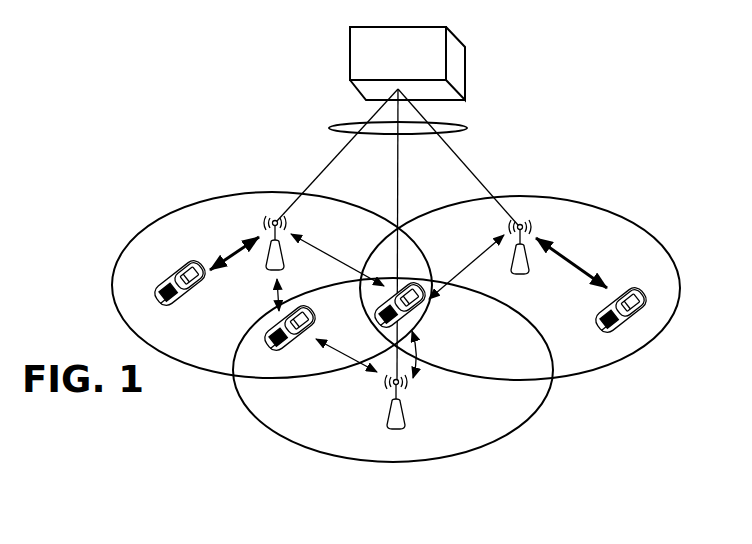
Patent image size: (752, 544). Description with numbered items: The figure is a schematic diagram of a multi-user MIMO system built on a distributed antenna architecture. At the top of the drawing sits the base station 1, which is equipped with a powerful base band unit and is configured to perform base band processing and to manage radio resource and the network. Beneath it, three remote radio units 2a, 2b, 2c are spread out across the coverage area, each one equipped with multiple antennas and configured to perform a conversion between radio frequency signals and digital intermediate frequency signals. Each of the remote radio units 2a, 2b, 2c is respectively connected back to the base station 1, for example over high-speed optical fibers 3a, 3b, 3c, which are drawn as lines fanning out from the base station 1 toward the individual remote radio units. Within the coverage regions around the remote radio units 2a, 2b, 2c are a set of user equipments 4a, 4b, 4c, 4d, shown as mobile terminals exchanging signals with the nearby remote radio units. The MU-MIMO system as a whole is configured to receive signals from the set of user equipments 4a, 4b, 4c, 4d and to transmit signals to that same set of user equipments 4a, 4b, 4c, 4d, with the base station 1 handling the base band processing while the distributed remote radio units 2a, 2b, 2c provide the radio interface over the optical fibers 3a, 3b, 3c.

The base station 1 is at (350, 43).
The remote radio unit 2a is at (263, 233).
The remote radio unit 2b is at (394, 420).
The remote radio unit 2c is at (521, 262).
The high-speed optical fiber 3a is at (322, 171).
The high-speed optical fiber 3b is at (398, 199).
The high-speed optical fiber 3c is at (483, 187).
The user equipment 4a is at (176, 283).
The user equipment 4b is at (275, 344).
The user equipment 4c is at (413, 322).
The user equipment 4d is at (632, 323).